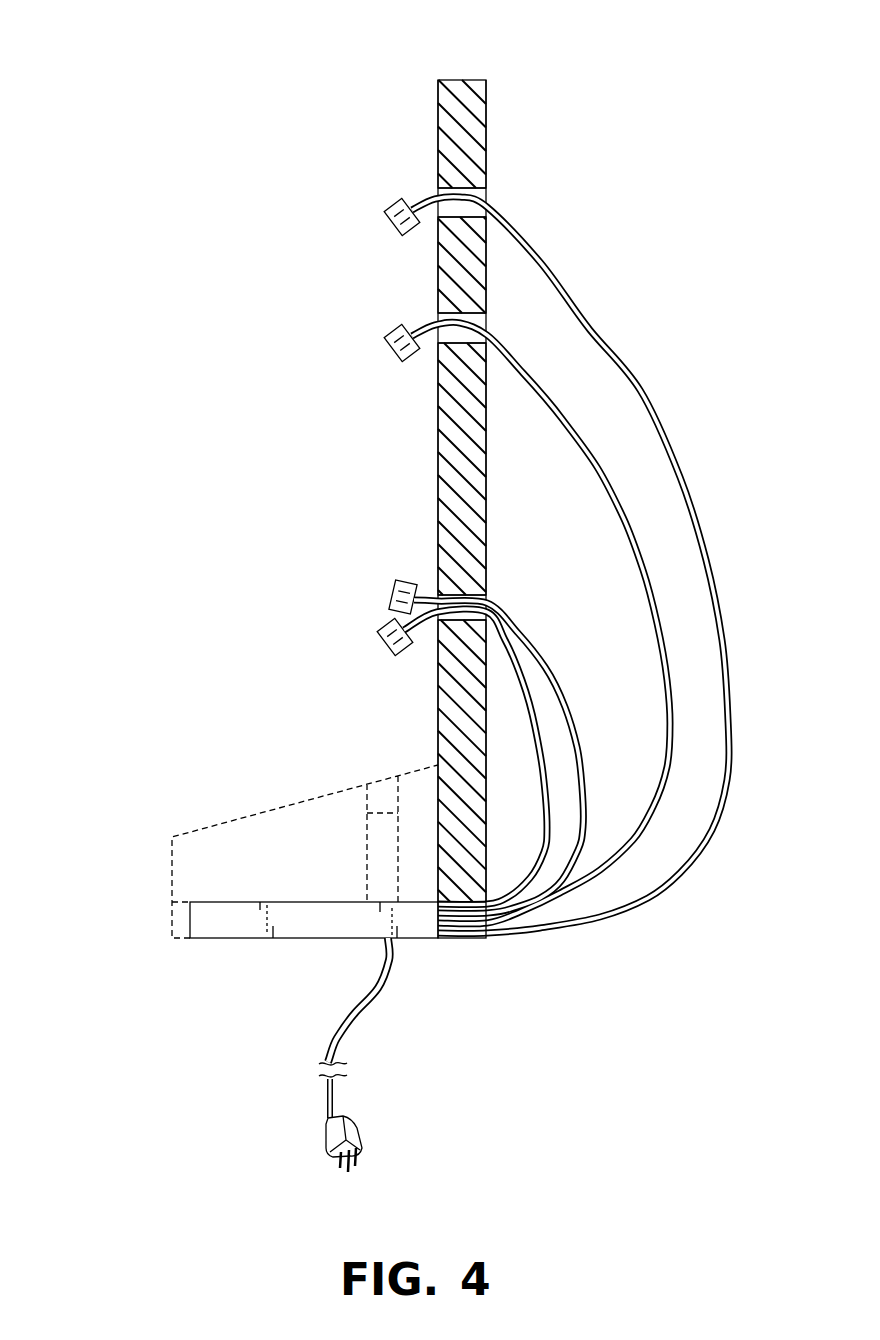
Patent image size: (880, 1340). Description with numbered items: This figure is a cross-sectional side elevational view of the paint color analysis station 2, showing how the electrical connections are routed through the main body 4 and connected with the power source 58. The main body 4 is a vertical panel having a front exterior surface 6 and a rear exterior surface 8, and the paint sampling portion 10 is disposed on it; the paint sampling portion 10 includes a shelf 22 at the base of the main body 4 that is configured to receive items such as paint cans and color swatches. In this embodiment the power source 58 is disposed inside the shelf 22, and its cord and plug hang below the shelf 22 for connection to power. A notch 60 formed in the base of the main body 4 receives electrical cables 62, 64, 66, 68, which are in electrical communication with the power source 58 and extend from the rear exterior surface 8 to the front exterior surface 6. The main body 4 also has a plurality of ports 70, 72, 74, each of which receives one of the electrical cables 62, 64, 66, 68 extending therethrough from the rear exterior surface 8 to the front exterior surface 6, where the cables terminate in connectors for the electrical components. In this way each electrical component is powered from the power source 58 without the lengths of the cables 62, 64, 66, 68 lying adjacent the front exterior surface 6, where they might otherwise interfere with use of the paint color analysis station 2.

The paint color analysis station 2 is at (611, 51).
The main body 4 is at (434, 148).
The front exterior surface 6 is at (437, 260).
The rear exterior surface 8 is at (487, 261).
The paint sampling portion 10 is at (255, 806).
The shelf 22 is at (166, 904).
The power source 58 is at (322, 939).
The notch 60 is at (462, 943).
The electrical cable 62 is at (648, 903).
The electrical cable 64 is at (654, 619).
The electrical cable 66 is at (586, 778).
The electrical cable 68 is at (553, 842).
The port 70 is at (466, 188).
The port 72 is at (467, 312).
The port 74 is at (470, 595).